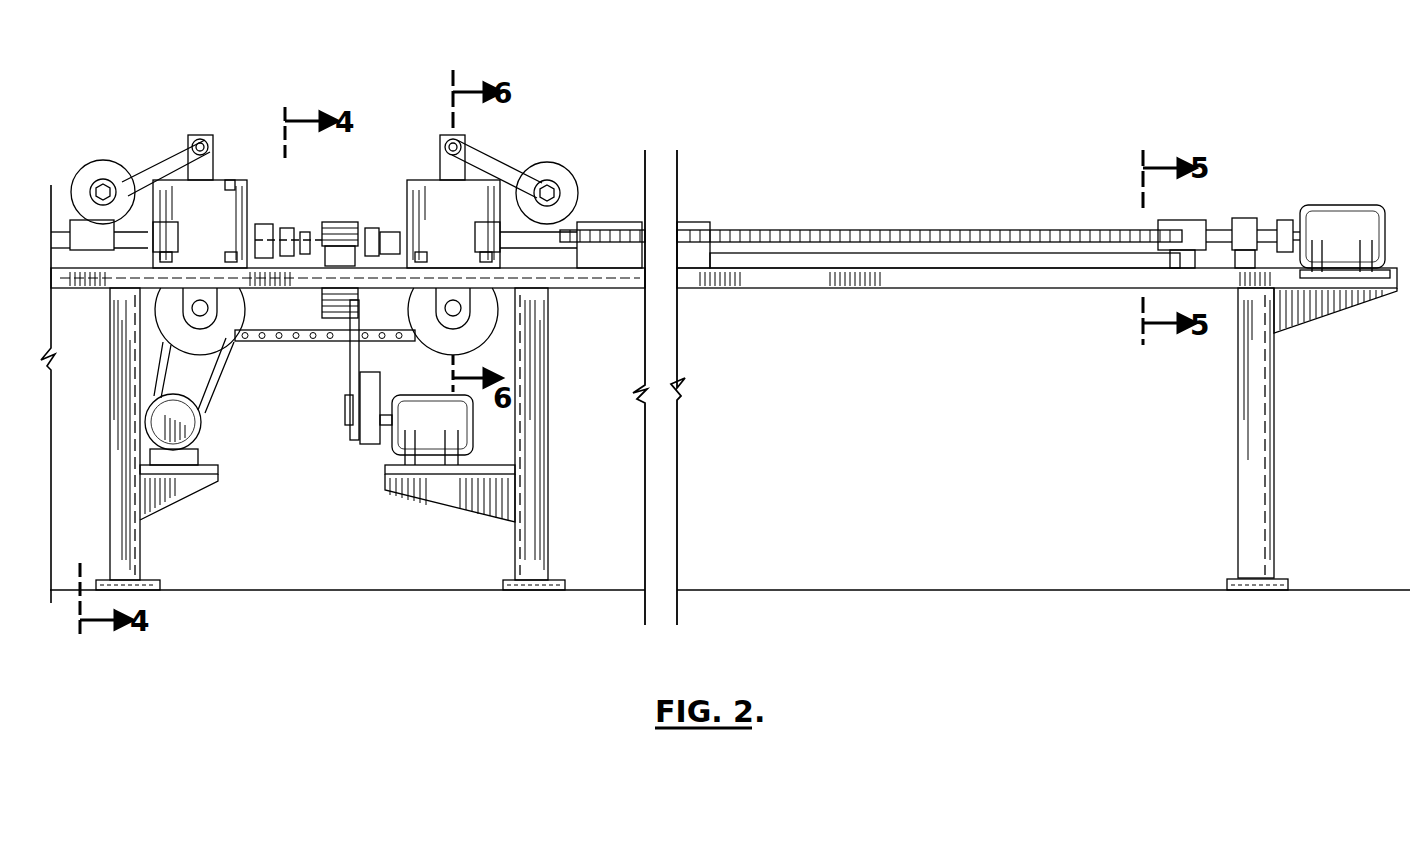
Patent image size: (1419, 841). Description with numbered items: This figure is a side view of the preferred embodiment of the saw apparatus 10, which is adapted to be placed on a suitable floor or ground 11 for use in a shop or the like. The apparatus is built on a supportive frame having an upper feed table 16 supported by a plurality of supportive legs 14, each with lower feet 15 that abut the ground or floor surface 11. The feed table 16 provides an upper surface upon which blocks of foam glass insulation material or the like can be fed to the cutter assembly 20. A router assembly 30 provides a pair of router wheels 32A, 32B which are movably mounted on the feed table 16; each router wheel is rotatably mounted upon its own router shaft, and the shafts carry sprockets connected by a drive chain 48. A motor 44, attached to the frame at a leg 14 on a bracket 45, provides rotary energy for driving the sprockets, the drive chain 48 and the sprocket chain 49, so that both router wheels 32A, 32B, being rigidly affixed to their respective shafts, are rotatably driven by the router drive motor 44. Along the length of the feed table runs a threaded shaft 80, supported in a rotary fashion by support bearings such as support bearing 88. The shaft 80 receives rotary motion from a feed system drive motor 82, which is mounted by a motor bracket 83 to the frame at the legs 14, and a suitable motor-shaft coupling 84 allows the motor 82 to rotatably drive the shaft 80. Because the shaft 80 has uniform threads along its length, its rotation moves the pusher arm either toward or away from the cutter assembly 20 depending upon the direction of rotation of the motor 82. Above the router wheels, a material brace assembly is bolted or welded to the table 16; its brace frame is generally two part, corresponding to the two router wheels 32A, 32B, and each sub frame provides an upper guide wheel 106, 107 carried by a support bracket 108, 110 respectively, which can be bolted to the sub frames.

The saw apparatus 10 is at (870, 88).
The floor or ground 11 is at (1033, 585).
The supportive legs 14 is at (122, 512).
The lower feet 15 is at (150, 580).
The upper feed table 16 is at (940, 290).
The cutter assembly 20 is at (332, 212).
The router assembly 30 is at (302, 486).
The router wheel 32A is at (228, 344).
The router wheel 32B is at (440, 346).
The motor 44 is at (187, 420).
The bracket 45 is at (183, 486).
The drive chain 48 is at (160, 370).
The sprocket chain 49 is at (333, 342).
The shaft 80 is at (1020, 225).
The feed system drive motor 82 is at (1335, 212).
The motor bracket 83 is at (1312, 318).
The motor-shaft coupling 84 is at (1283, 215).
The support bearing 88 is at (1240, 215).
The upper guide wheel 106 is at (557, 175).
The upper guide wheel 107 is at (100, 178).
The support bracket 108 is at (440, 160).
The support bracket 110 is at (213, 158).